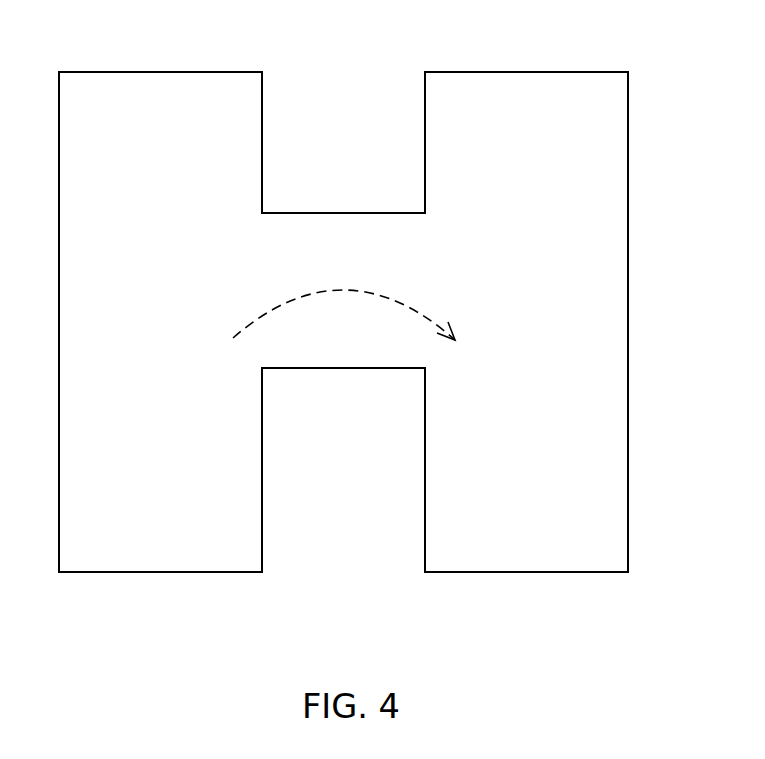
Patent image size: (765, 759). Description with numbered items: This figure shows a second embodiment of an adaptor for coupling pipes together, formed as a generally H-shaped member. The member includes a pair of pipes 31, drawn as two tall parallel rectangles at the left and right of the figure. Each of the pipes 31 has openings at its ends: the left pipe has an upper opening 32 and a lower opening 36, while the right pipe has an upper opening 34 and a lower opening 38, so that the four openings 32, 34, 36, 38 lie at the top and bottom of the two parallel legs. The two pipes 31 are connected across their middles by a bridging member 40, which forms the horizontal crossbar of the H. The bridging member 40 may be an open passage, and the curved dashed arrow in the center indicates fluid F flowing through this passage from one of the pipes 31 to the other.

The pipes 31 is at (169, 255).
The opening 32 is at (140, 72).
The opening 34 is at (526, 72).
The opening 36 is at (144, 572).
The opening 38 is at (510, 572).
The bridging member 40 is at (314, 221).
The fluid F is at (343, 290).